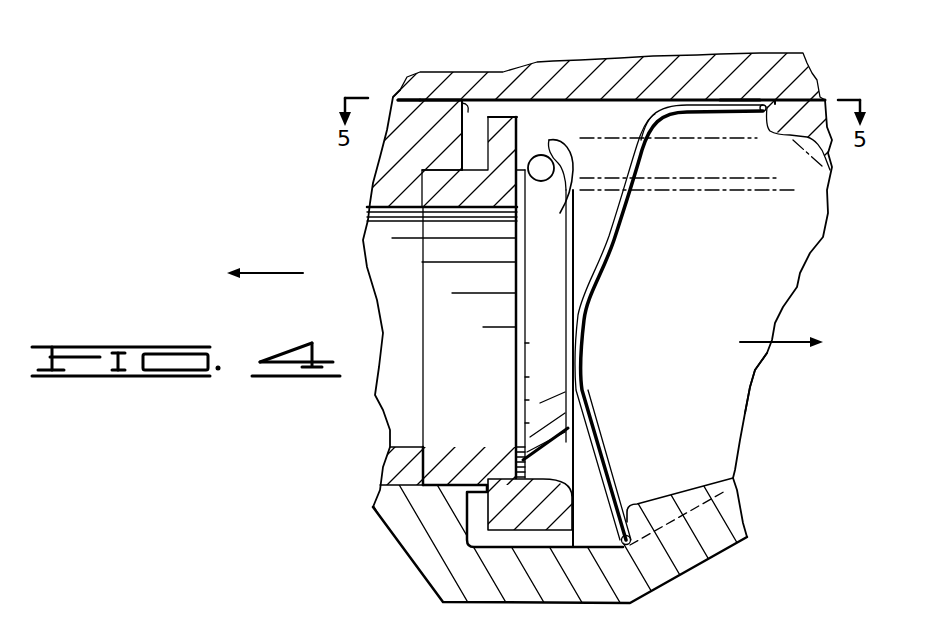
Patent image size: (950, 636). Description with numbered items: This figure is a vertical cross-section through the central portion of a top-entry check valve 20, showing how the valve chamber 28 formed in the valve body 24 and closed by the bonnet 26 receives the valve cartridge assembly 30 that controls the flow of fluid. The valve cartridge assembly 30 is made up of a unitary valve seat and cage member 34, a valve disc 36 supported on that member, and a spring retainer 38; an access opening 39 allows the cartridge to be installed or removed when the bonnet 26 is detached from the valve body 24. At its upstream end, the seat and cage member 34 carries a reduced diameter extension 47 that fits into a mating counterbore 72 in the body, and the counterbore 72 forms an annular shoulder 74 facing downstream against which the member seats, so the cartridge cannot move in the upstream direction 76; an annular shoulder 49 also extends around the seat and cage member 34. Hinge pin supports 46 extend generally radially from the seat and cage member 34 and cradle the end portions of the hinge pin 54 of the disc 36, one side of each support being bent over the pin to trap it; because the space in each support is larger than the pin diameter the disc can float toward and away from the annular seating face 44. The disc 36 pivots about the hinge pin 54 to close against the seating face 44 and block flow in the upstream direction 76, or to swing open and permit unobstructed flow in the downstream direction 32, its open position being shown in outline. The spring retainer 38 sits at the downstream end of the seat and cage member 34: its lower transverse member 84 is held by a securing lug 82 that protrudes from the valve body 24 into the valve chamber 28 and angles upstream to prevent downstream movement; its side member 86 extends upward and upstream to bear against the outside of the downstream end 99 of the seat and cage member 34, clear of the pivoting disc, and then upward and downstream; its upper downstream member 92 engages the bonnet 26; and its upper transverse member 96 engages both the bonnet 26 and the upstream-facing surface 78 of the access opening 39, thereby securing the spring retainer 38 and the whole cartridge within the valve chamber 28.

The valve 20 is at (385, 80).
The valve body 24 is at (634, 592).
The bonnet 26 is at (573, 83).
The valve chamber 28 is at (725, 400).
The valve cartridge assembly 30 is at (594, 229).
The downstream direction 32 is at (795, 342).
The unitary valve seat and cage member 34 is at (440, 435).
The valve disc 36 is at (568, 270).
The spring retainer 38 is at (644, 117).
The access opening 39 is at (445, 73).
The annular seating face 44 is at (527, 463).
The hinge pin supports 46 is at (534, 162).
The reduced diameter extension 47 is at (442, 452).
The annular shoulder 49 is at (497, 142).
The hinge pin 54 is at (503, 100).
The counterbore 72 is at (462, 490).
The annular shoulder 74 is at (423, 461).
The upstream direction 76 is at (250, 273).
The upstream-facing surface 78 is at (765, 110).
The securing lug 82 is at (670, 493).
The lower transverse member 84 is at (630, 547).
The side member 86 is at (588, 335).
The upper downstream member 92 is at (727, 123).
The upper transverse member 96 is at (813, 73).
The downstream end 99 is at (577, 506).